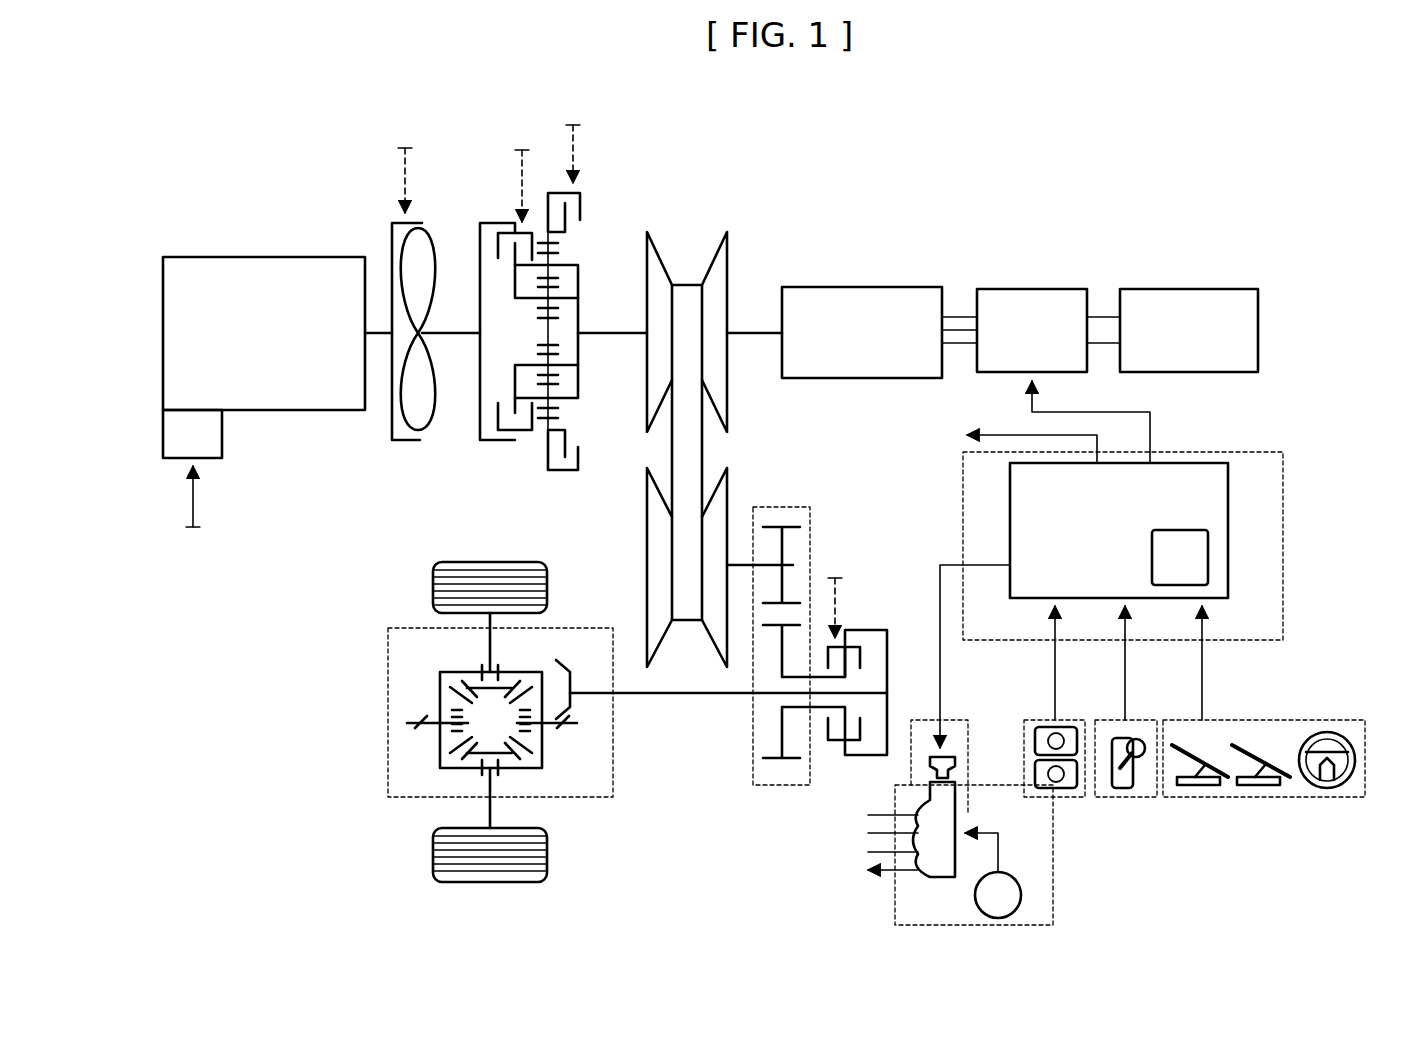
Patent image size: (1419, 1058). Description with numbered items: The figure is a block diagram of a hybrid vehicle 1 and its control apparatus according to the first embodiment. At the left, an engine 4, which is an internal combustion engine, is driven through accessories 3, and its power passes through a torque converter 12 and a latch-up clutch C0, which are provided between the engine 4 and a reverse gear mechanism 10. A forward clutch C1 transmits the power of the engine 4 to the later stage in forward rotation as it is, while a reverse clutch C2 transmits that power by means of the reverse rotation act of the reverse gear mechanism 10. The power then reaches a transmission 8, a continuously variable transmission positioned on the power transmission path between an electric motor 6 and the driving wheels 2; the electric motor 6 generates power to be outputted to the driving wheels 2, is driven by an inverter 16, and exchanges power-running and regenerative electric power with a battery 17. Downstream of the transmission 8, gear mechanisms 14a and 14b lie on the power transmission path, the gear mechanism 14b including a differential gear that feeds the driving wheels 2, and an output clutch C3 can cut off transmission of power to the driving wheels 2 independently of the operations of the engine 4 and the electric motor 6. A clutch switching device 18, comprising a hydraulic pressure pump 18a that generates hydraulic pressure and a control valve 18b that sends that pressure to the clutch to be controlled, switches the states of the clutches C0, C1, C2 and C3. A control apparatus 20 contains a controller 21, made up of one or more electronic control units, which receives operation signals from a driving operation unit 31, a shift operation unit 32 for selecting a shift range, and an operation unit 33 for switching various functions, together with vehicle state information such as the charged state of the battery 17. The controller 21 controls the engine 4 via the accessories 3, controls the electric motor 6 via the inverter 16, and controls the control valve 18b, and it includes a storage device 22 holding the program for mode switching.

The hybrid vehicle 1 is at (1110, 162).
The driving wheels 2 is at (511, 561).
The accessories 3 is at (224, 448).
The engine 4 is at (275, 256).
The electric motor 6 is at (880, 287).
The transmission 8 is at (740, 226).
The reverse gear mechanism 10 is at (591, 412).
The torque converter 12 is at (406, 452).
The gear mechanism 14a is at (800, 507).
The gear mechanism 14b is at (578, 628).
The inverter 16 is at (1037, 289).
The battery 17 is at (1187, 289).
The clutch switching device 18 is at (968, 720).
The hydraulic pressure pump 18a is at (1010, 873).
The control valve 18b is at (957, 810).
The control apparatus 20 is at (1258, 455).
The controller 21 is at (1208, 463).
The storage device 22 is at (1186, 530).
The driving operation unit 31 is at (1270, 720).
The shift operation unit 32 is at (1150, 720).
The operation unit 33 is at (1078, 720).
The latch-up clutch C0 is at (400, 220).
The forward clutch C1 is at (506, 232).
The reverse clutch C2 is at (560, 194).
The output clutch C3 is at (850, 644).